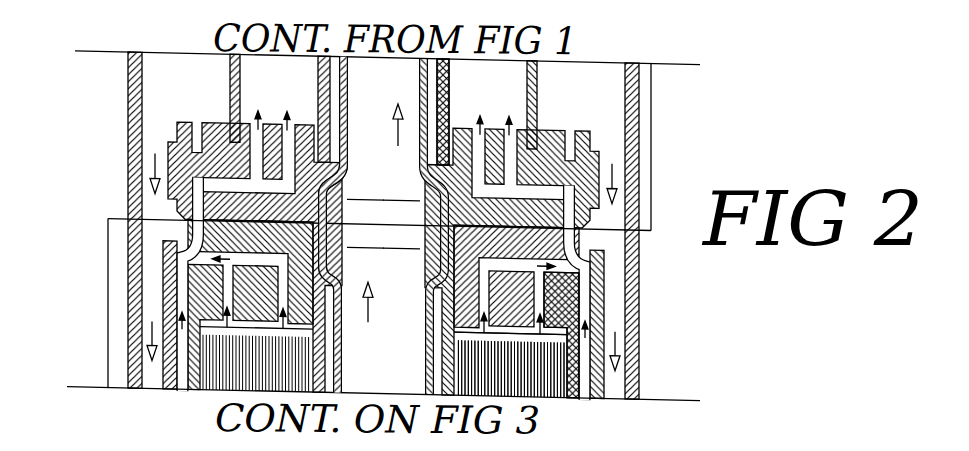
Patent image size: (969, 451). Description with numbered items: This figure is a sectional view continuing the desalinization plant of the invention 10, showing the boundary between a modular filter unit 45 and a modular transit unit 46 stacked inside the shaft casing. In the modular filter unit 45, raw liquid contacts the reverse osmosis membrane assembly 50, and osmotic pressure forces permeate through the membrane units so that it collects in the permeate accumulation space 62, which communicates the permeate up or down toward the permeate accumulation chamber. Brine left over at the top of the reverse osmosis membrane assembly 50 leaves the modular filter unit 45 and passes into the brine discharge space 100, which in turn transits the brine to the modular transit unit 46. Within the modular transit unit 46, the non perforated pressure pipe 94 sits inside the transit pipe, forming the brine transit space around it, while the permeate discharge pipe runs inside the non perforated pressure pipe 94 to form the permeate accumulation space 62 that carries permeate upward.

The invention 10 is at (776, 145).
The non perforated pressure pipe 94 is at (449, 93).
The modular filter unit 45 is at (108, 203).
The modular transit unit 46 is at (651, 239).
The permeate accumulation space 62 is at (330, 298).
The reverse osmosis membrane assembly 50 is at (545, 343).
The brine discharge space 100 is at (578, 377).